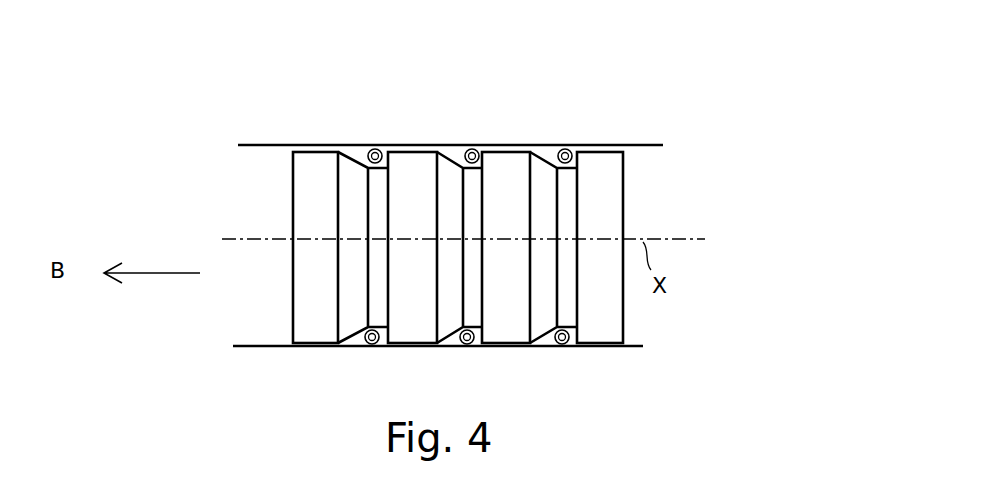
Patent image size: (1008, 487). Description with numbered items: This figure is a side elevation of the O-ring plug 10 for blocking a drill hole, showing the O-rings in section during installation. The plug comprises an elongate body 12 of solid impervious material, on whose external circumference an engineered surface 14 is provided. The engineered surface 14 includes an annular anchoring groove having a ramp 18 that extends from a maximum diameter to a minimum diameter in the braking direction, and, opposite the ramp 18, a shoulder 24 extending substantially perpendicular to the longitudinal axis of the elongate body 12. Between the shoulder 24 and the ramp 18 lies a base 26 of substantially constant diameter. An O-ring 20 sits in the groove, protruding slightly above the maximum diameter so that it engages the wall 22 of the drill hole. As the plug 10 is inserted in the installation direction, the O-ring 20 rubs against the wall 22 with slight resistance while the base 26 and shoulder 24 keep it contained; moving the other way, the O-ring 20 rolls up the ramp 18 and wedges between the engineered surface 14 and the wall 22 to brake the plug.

The O-ring plug 10 is at (640, 102).
The elongate body 12 is at (293, 302).
The engineered surface 14 is at (484, 136).
The ramp 18 is at (544, 163).
The O-ring 20 is at (533, 349).
The wall 22 is at (648, 148).
The shoulder 24 is at (583, 158).
The base 26 is at (568, 170).